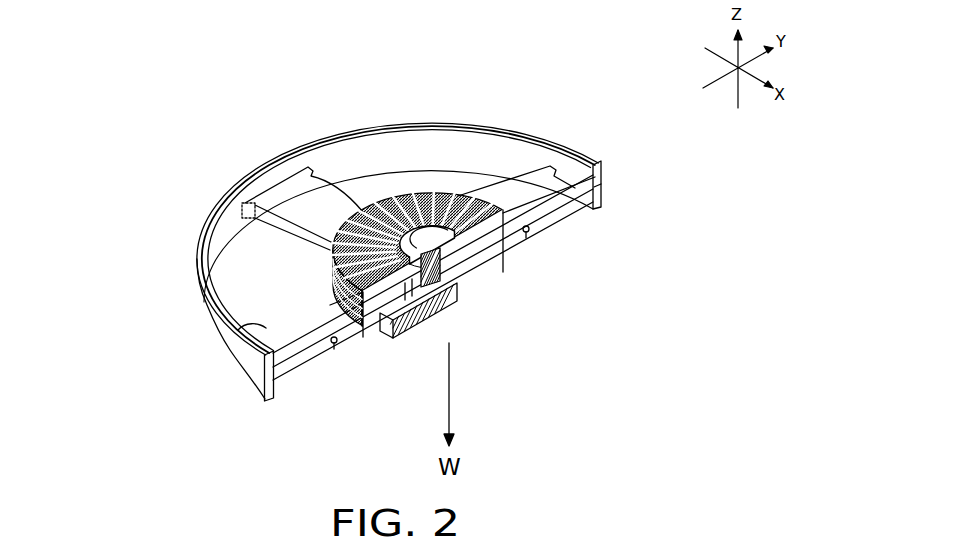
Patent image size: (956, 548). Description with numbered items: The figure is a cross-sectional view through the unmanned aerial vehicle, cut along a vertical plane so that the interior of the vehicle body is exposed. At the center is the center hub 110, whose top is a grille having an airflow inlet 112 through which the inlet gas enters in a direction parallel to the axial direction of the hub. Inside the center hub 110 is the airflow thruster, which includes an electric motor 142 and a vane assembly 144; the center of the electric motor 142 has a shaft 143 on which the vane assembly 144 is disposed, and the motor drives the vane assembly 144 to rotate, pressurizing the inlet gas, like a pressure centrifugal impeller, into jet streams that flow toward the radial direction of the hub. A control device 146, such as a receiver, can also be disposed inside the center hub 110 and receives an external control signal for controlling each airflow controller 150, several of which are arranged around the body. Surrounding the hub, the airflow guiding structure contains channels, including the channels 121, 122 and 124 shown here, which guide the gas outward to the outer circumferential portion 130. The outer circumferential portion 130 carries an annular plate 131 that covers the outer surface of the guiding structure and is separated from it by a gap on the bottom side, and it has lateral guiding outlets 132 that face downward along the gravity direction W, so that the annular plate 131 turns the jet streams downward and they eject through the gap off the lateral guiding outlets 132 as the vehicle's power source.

The center hub 110 is at (350, 357).
The airflow inlet 112 is at (410, 190).
The channel 121 is at (275, 198).
The channel 122 is at (551, 190).
The channel 124 is at (245, 328).
The outer circumferential portion 130 is at (369, 248).
The annular plate 131 is at (213, 209).
The lateral guiding outlet 132 is at (597, 213).
The electric motor 142 is at (457, 307).
The shaft 143 is at (416, 334).
The vane assembly 144 is at (497, 262).
The control device 146 is at (418, 345).
The airflow controller 150 is at (530, 234).